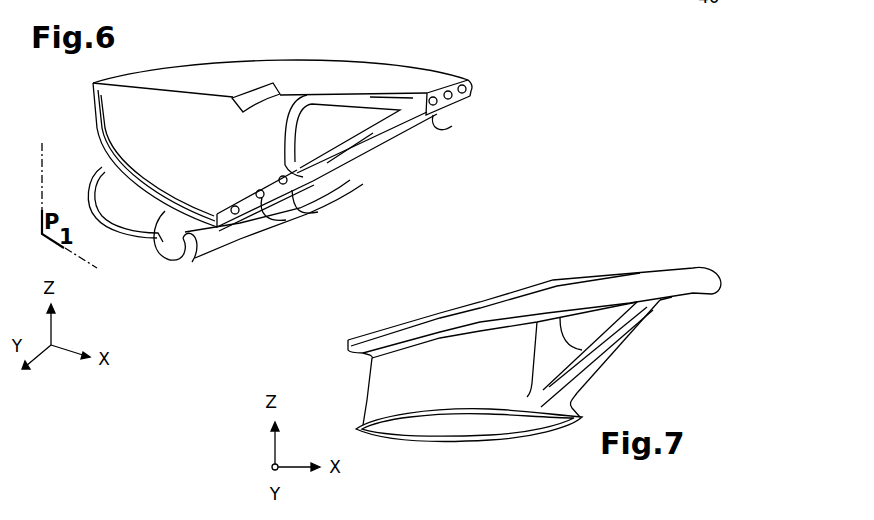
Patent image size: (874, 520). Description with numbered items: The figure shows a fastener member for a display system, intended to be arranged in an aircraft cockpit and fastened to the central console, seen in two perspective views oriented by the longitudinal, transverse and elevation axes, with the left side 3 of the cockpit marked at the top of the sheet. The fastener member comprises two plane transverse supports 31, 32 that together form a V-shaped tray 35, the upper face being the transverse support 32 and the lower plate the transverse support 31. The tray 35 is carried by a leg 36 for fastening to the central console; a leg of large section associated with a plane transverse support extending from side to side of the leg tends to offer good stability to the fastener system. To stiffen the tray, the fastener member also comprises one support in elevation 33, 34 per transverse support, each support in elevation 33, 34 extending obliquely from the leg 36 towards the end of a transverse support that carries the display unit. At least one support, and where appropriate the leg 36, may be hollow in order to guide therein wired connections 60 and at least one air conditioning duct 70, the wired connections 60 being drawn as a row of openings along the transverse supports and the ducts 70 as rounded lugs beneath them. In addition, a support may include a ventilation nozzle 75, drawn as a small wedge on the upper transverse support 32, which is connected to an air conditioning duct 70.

In FIG. 6, the left side 3 is at (628, 5).
In FIG. 6, the transverse support 31 is at (182, 170).
In FIG. 7, the transverse support 31 is at (655, 278).
In FIG. 6, the transverse support 32 is at (328, 82).
In FIG. 6, the support in elevation 33 is at (185, 250).
In FIG. 7, the support in elevation 33 is at (650, 327).
In FIG. 6, the support in elevation 34 is at (375, 143).
In FIG. 6, the V-shaped tray 35 is at (217, 70).
In FIG. 7, the V-shaped tray 35 is at (529, 255).
In FIG. 6, the leg 36 is at (105, 170).
In FIG. 7, the leg 36 is at (385, 380).
In FIG. 6, the wired connections 60 is at (472, 87).
In FIG. 6, the air conditioning duct 70 is at (463, 112).
In FIG. 6, the ventilation nozzle 75 is at (248, 80).